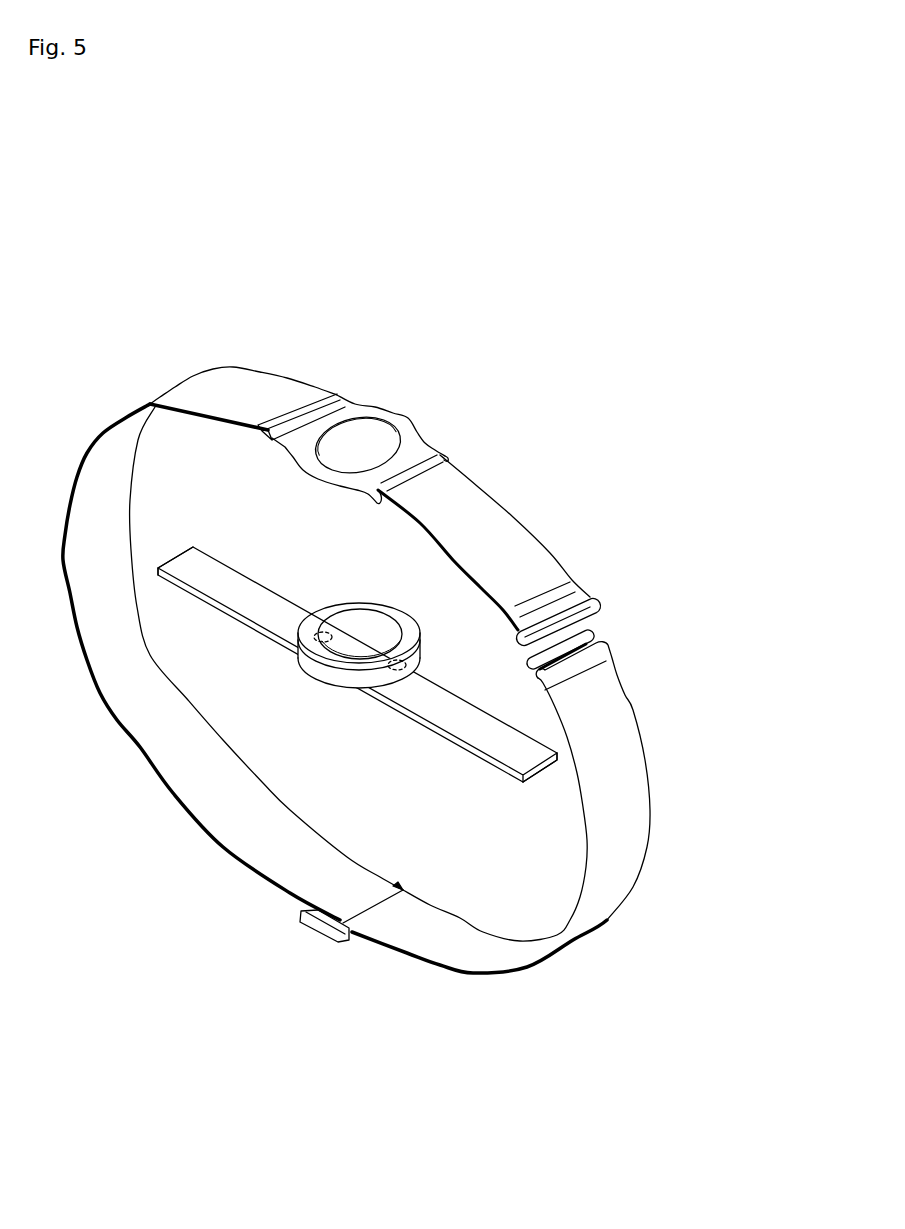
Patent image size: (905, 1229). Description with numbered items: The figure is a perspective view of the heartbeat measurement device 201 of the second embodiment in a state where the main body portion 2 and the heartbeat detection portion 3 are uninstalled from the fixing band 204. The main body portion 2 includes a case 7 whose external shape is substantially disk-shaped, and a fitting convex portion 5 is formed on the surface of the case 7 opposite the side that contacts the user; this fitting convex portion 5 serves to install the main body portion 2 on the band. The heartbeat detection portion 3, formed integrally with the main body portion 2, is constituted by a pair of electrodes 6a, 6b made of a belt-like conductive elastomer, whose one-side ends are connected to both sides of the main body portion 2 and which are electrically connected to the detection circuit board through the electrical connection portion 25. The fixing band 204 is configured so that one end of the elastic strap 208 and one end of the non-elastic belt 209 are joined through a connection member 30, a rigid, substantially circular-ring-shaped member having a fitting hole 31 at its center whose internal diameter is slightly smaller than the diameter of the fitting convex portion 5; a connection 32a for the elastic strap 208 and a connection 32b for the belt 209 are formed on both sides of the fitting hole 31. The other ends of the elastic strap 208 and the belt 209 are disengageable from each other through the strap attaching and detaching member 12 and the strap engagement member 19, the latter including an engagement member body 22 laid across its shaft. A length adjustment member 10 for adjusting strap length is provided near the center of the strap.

The heartbeat measurement device 201 is at (537, 325).
The connection member 30 is at (355, 418).
The fitting hole 31 is at (375, 462).
The connection 32a is at (286, 442).
The connection 32b is at (440, 443).
The non-elastic belt 209 is at (540, 536).
The strap engagement member 19 is at (600, 585).
The engagement member body 22 is at (612, 606).
The strap attaching and detaching member 12 is at (620, 628).
The fixing band 204 is at (652, 697).
The elastic strap 208 is at (224, 861).
The main body portion 2 is at (378, 663).
The fitting convex portion 5 is at (372, 625).
The case 7 is at (314, 691).
The electrical connection portion 25 is at (325, 633).
The heartbeat detection portion 3 is at (433, 741).
The electrode 6a is at (205, 590).
The electrode 6b is at (480, 767).
The length adjustment member 10 is at (320, 940).